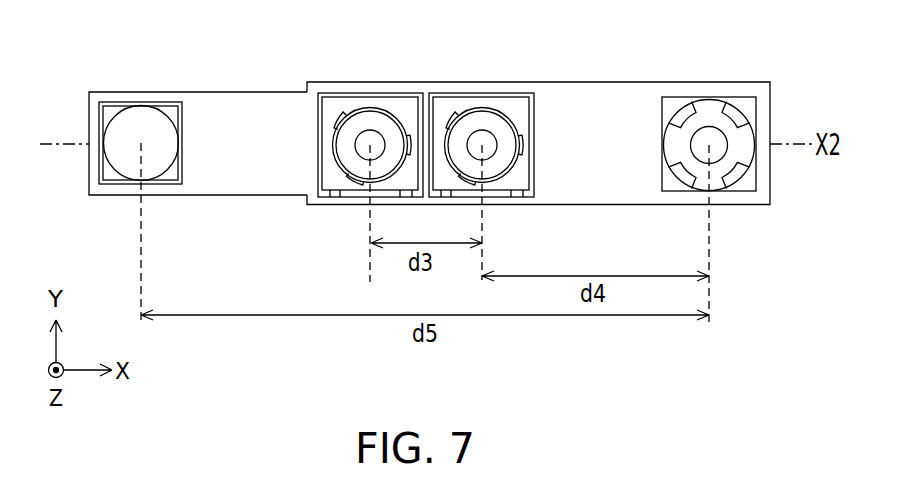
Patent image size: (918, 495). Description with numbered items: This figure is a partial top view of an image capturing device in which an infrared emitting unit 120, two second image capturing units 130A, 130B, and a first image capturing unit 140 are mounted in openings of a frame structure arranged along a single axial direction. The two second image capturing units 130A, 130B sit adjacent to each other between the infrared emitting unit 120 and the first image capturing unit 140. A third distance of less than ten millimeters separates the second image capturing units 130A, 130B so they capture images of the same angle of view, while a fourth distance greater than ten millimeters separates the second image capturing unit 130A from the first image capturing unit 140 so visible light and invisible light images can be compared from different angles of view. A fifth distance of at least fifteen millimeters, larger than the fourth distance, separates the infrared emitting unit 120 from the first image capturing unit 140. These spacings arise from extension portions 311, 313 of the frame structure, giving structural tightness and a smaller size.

The infrared emitting unit 120 is at (147, 137).
The extension portion 311 is at (257, 91).
The second image capturing unit 130A is at (372, 105).
The second image capturing unit 130B is at (485, 105).
The extension portion 313 is at (595, 98).
The first image capturing unit 140 is at (710, 115).